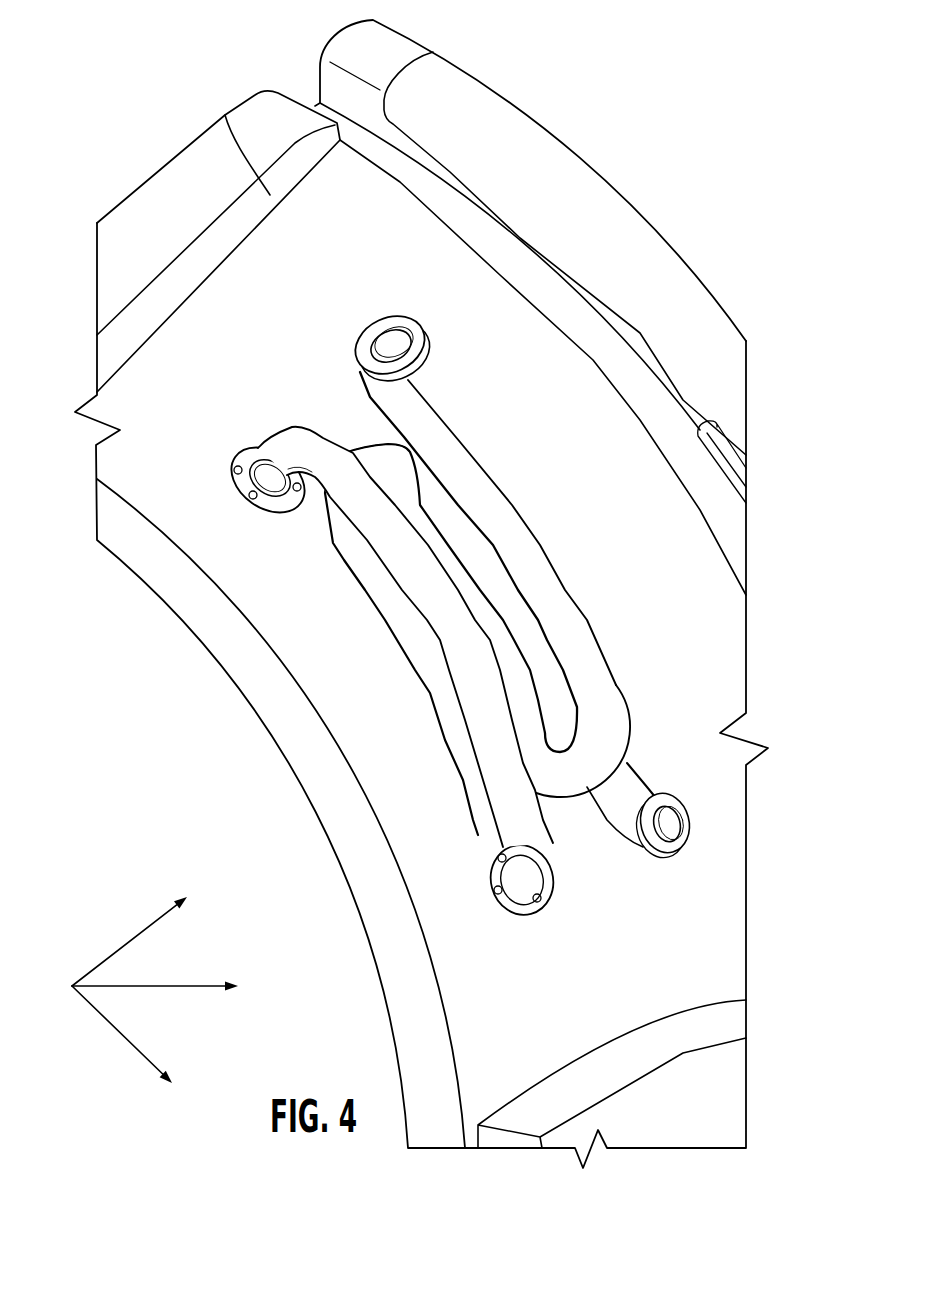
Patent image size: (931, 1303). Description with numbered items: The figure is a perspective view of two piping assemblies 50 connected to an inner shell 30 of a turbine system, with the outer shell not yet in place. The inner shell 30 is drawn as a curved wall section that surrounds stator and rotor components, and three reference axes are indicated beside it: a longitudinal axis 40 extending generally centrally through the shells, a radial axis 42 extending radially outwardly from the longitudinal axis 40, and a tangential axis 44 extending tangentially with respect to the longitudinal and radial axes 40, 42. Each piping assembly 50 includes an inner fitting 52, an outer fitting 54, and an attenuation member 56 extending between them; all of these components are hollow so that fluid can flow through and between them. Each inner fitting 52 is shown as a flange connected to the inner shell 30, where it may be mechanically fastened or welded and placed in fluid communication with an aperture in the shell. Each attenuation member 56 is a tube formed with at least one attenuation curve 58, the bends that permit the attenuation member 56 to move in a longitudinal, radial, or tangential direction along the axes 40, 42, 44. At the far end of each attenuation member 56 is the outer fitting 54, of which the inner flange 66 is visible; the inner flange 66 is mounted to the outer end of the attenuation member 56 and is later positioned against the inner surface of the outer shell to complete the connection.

The inner shell 30 is at (272, 240).
The longitudinal axis 40 is at (138, 932).
The radial axis 42 is at (180, 985).
The tangential axis 44 is at (132, 1050).
The piping assembly 50 is at (460, 605).
The inner fitting 52 is at (258, 520).
The outer fitting 54 is at (524, 585).
The attenuation member 56 is at (540, 505).
The attenuation curve 58 is at (363, 438).
The inner flange 66 is at (370, 322).